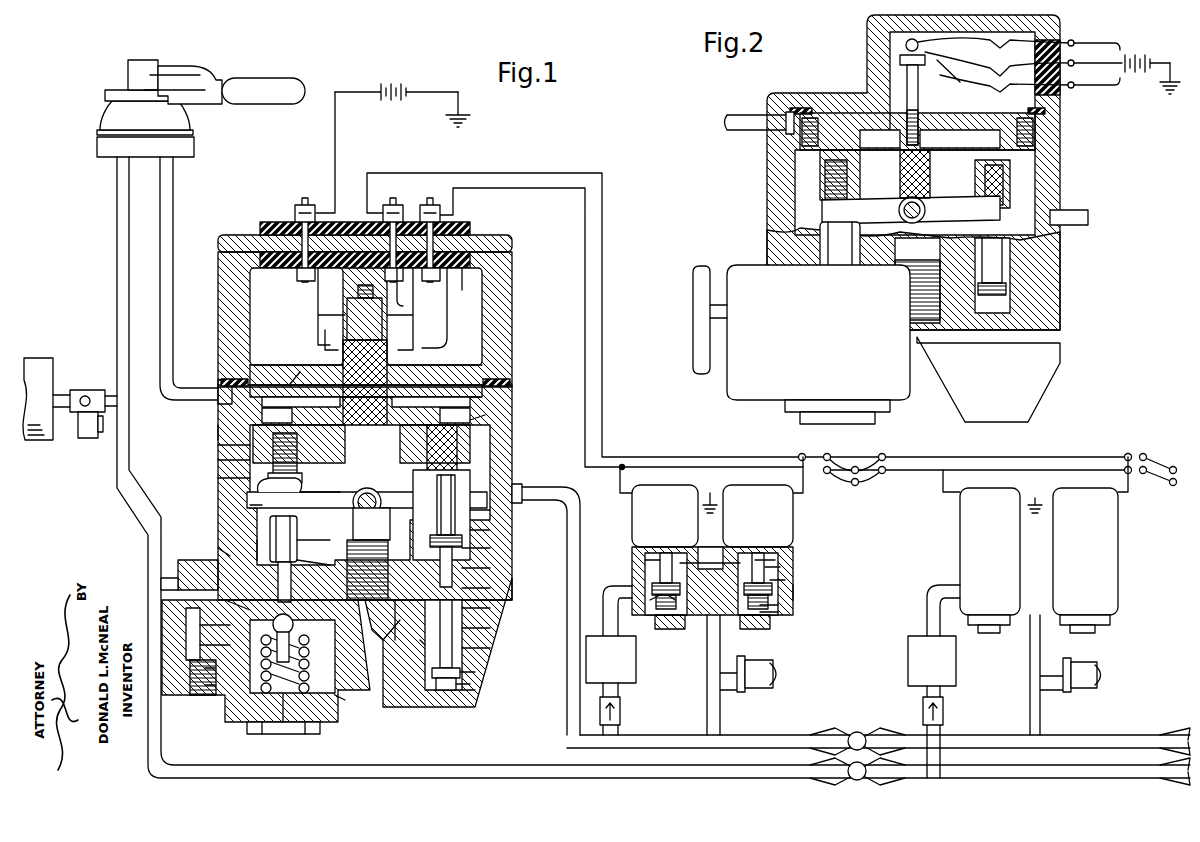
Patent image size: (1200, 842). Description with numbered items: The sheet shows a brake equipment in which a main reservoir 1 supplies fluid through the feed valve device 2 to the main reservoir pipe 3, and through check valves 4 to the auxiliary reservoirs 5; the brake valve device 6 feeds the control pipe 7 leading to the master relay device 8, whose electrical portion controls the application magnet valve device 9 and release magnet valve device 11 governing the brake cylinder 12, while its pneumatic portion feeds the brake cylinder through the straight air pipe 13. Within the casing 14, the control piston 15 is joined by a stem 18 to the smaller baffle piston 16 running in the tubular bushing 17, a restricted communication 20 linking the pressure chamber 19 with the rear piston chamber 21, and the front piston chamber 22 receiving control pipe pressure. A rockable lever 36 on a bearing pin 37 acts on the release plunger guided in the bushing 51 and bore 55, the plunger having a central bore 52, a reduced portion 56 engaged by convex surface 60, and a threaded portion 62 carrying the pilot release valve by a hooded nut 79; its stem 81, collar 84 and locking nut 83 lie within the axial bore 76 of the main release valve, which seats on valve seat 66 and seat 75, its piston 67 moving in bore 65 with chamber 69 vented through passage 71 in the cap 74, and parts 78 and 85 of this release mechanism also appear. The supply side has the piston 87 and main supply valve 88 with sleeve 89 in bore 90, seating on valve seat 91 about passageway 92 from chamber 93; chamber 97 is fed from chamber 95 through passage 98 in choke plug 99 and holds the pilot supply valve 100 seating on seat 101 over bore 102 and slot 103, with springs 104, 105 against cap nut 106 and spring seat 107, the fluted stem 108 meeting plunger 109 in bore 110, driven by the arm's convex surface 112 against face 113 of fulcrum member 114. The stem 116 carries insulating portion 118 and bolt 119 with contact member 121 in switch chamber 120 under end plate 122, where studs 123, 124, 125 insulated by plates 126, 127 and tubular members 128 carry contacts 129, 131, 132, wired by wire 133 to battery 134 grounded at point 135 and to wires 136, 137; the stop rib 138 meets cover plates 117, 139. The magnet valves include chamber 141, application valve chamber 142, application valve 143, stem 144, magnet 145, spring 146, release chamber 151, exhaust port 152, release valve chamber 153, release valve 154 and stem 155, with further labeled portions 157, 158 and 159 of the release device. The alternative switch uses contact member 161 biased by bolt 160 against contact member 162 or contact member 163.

In FIG. 1, the main reservoir 1 is at (38, 365).
In FIG. 1, the feed valve device 2 is at (80, 392).
In FIG. 1, the main reservoir pipe 3 is at (128, 470).
In FIG. 2, the main reservoir pipe 3 is at (692, 298).
In FIG. 1, the check valve 4 is at (621, 712).
In FIG. 1, the auxiliary reservoir 5 is at (636, 668).
In FIG. 1, the brake valve device 6 is at (112, 122).
In FIG. 1, the control pipe 7 is at (166, 203).
In FIG. 2, the control pipe 7 is at (743, 114).
In FIG. 1, the master relay device 8 is at (521, 292).
In FIG. 2, the master relay device 8 is at (913, 172).
In FIG. 1, the application magnet valve device 9 is at (623, 576).
In FIG. 1, the release magnet valve device 11 is at (801, 594).
In FIG. 1, the brake cylinder 12 is at (762, 690).
In FIG. 1, the straight air pipe 13 is at (715, 630).
In FIG. 2, the straight air pipe 13 is at (1070, 215).
In FIG. 1, the casing 14 is at (512, 402).
In FIG. 1, the control piston 15 is at (490, 388).
In FIG. 2, the control piston 15 is at (1045, 125).
In FIG. 1, the baffle piston 16 is at (470, 410).
In FIG. 1, the tubular bushing 17 is at (512, 425).
In FIG. 1, the stem 18 is at (300, 428).
In FIG. 1, the pressure chamber 19 is at (524, 488).
In FIG. 1, the restricted communication 20 is at (292, 458).
In FIG. 1, the piston chamber 21 is at (470, 430).
In FIG. 1, the piston chamber 22 is at (480, 380).
In FIG. 1, the rockable lever 36 is at (370, 495).
In FIG. 1, the bearing pin 37 is at (320, 488).
In FIG. 2, the bearing pin 37 is at (915, 187).
In FIG. 1, the bushing 51 is at (480, 448).
In FIG. 1, the central bore 52 is at (435, 450).
In FIG. 1, the reduced diameter portion 56 is at (485, 508).
In FIG. 1, the bore 55 is at (480, 530).
In FIG. 1, the convex surface 60 is at (462, 480).
In FIG. 1, the screw-threaded portion 62 is at (470, 550).
In FIG. 1, the bore 65 is at (470, 630).
In FIG. 1, the valve seat 66 is at (470, 610).
In FIG. 1, the piston 67 is at (470, 650).
In FIG. 1, the chamber 69 is at (475, 700).
In FIG. 1, the passage 71 is at (420, 640).
In FIG. 1, the cap 74 is at (420, 700).
In FIG. 1, the valve seat 75 is at (470, 590).
In FIG. 1, the axial bore 76 is at (423, 652).
In FIG. 1, the valve 78 is at (470, 570).
In FIG. 1, the hooded nut 79 is at (382, 550).
In FIG. 1, the stem 81 is at (406, 620).
In FIG. 1, the locking nut 83 is at (470, 684).
In FIG. 1, the circular collar 84 is at (475, 672).
In FIG. 1, the valve stem 85 is at (440, 700).
In FIG. 1, the piston 87 is at (215, 612).
In FIG. 1, the main supply valve 88 is at (257, 550).
In FIG. 1, the annular sleeve 89 is at (225, 630).
In FIG. 1, the bore 90 is at (210, 652).
In FIG. 1, the valve seat 91 is at (252, 600).
In FIG. 1, the passageway 92 is at (252, 520).
In FIG. 1, the chamber 93 is at (222, 570).
In FIG. 1, the chamber 95 is at (195, 672).
In FIG. 1, the chamber 97 is at (245, 708).
In FIG. 1, the passage 98 is at (192, 700).
In FIG. 1, the choke plug 99 is at (195, 688).
In FIG. 1, the pilot supply valve 100 is at (320, 648).
In FIG. 1, the seat 101 is at (316, 632).
In FIG. 1, the central bore 102 is at (320, 567).
In FIG. 1, the narrow slot 103 is at (320, 544).
In FIG. 1, the control coil spring 104 is at (262, 725).
In FIG. 1, the control coil spring 105 is at (283, 724).
In FIG. 1, the cap nut 106 is at (308, 724).
In FIG. 1, the spring seat 107 is at (338, 700).
In FIG. 1, the fluted stem 108 is at (300, 612).
In FIG. 1, the valve controlling plunger 109 is at (270, 534).
In FIG. 1, the bore 110 is at (305, 528).
In FIG. 1, the convex surface 112 is at (250, 472).
In FIG. 1, the convex face 113 is at (236, 452).
In FIG. 1, the fulcrum member 114 is at (248, 492).
In FIG. 1, the stem 116 is at (374, 348).
In FIG. 1, the cover plate 117 is at (440, 374).
In FIG. 1, the insulating portion 118 is at (352, 303).
In FIG. 1, the bolt 119 is at (390, 322).
In FIG. 1, the switch chamber 120 is at (250, 300).
In FIG. 1, the switch contact member 121 is at (322, 302).
In FIG. 1, the end plate 122 is at (240, 245).
In FIG. 1, the switch connecting stud 123 is at (306, 204).
In FIG. 1, the switch connecting stud 124 is at (395, 204).
In FIG. 1, the switch connecting stud 125 is at (435, 204).
In FIG. 1, the insulating plate 126 is at (458, 238).
In FIG. 1, the insulating plate 127 is at (460, 276).
In FIG. 1, the insulating tubular member 128 is at (365, 228).
In FIG. 1, the switch contact member 129 is at (324, 340).
In FIG. 1, the switch contact member 131 is at (421, 287).
In FIG. 1, the switch contact member 132 is at (440, 320).
In FIG. 1, the wire 133 is at (335, 148).
In FIG. 2, the wire 133 is at (1116, 64).
In FIG. 1, the battery 134 is at (386, 84).
In FIG. 2, the battery 134 is at (1150, 58).
In FIG. 1, the ground point 135 is at (468, 122).
In FIG. 2, the ground point 135 is at (1162, 95).
In FIG. 1, the release magnet valve wire 136 is at (602, 245).
In FIG. 2, the release magnet valve wire 136 is at (1114, 40).
In FIG. 1, the application magnet valve wire 137 is at (585, 270).
In FIG. 2, the application magnet valve wire 137 is at (1116, 88).
In FIG. 1, the annular stop rib 138 is at (305, 365).
In FIG. 1, the cover plate 139 is at (278, 372).
In FIG. 1, the chamber 141 is at (218, 432).
In FIG. 1, the application valve chamber 142 is at (655, 620).
In FIG. 1, the application valve 143 is at (632, 592).
In FIG. 1, the stem 144 is at (645, 548).
In FIG. 1, the magnet 145 is at (640, 512).
In FIG. 1, the spring 146 is at (676, 622).
In FIG. 1, the release chamber 151 is at (780, 548).
In FIG. 1, the exhaust port 152 is at (782, 560).
In FIG. 1, the release valve chamber 153 is at (785, 602).
In FIG. 1, the release valve 154 is at (780, 612).
In FIG. 1, the stem 155 is at (785, 574).
In FIG. 1, the solenoid 157 is at (785, 508).
In FIG. 1, the spring 158 is at (755, 625).
In FIG. 1, the ground 159 is at (716, 517).
In FIG. 2, the bolt 160 is at (905, 76).
In FIG. 2, the spring biased contact member 161 is at (945, 65).
In FIG. 2, the contact member 162 is at (905, 45).
In FIG. 2, the contact member 163 is at (962, 83).